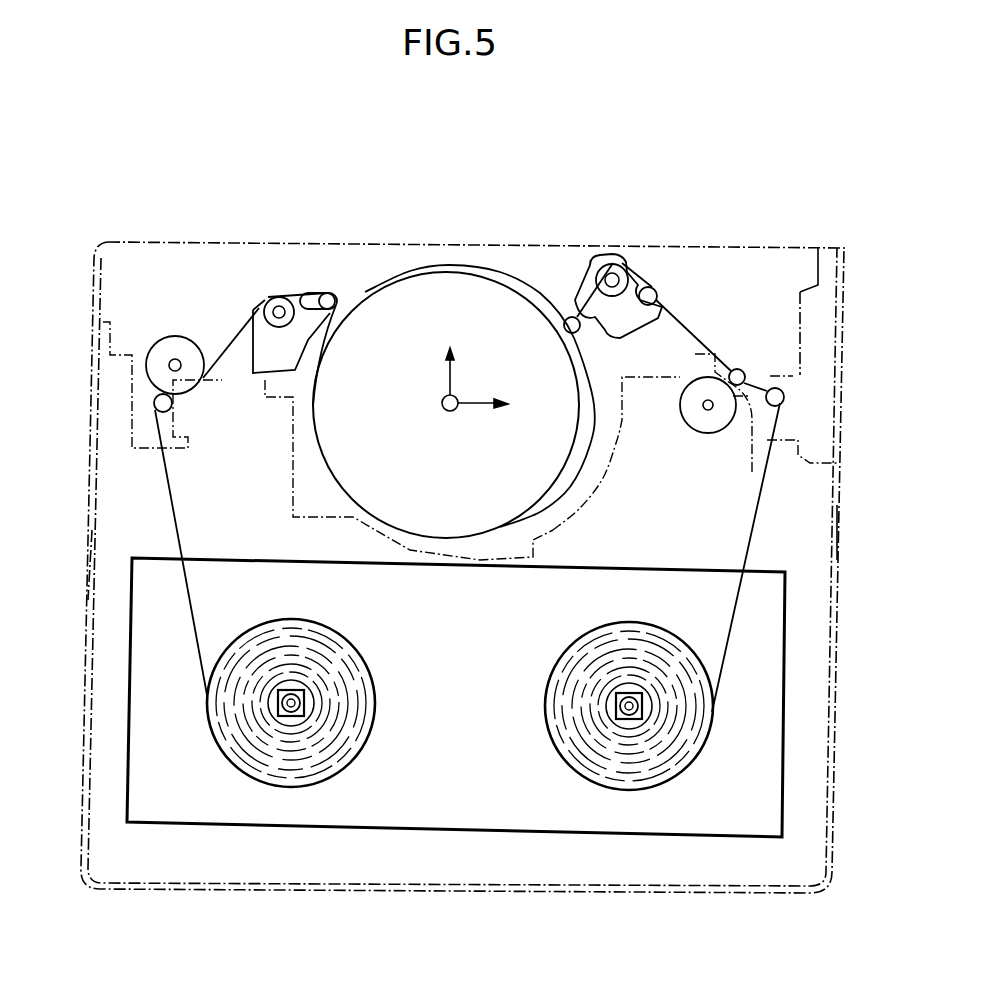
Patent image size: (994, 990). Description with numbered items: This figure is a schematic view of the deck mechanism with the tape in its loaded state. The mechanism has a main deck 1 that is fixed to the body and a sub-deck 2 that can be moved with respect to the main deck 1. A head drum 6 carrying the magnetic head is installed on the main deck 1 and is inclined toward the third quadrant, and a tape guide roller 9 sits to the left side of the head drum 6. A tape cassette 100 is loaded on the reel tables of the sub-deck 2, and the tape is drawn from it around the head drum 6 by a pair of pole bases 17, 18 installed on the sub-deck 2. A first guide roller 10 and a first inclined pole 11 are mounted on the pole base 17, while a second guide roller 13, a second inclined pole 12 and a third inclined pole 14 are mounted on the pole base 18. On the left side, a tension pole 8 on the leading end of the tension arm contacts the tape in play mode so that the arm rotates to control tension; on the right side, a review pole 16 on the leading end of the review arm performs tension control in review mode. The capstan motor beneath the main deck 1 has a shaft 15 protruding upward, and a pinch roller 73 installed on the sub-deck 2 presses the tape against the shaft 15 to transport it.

The main deck 1 is at (118, 242).
The sub-deck 2 is at (90, 593).
The head drum 6 is at (452, 288).
The tension pole 8 is at (157, 402).
The tape guide roller 9 is at (160, 355).
The first guide roller 10 is at (284, 296).
The first inclined pole 11 is at (329, 292).
The second inclined pole 12 is at (572, 317).
The second guide roller 13 is at (614, 264).
The third inclined pole 14 is at (654, 286).
The capstan motor shaft 15 is at (745, 372).
The review pole 16 is at (784, 394).
The pole base 17 is at (251, 310).
The pole base 18 is at (609, 256).
The pinch roller 73 is at (722, 420).
The tape cassette 100 is at (717, 838).